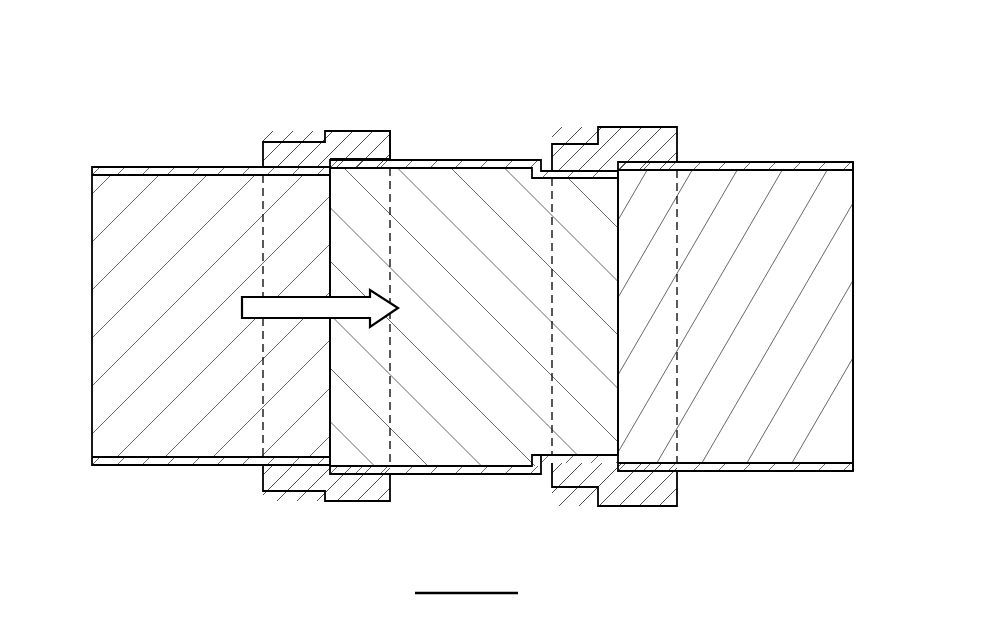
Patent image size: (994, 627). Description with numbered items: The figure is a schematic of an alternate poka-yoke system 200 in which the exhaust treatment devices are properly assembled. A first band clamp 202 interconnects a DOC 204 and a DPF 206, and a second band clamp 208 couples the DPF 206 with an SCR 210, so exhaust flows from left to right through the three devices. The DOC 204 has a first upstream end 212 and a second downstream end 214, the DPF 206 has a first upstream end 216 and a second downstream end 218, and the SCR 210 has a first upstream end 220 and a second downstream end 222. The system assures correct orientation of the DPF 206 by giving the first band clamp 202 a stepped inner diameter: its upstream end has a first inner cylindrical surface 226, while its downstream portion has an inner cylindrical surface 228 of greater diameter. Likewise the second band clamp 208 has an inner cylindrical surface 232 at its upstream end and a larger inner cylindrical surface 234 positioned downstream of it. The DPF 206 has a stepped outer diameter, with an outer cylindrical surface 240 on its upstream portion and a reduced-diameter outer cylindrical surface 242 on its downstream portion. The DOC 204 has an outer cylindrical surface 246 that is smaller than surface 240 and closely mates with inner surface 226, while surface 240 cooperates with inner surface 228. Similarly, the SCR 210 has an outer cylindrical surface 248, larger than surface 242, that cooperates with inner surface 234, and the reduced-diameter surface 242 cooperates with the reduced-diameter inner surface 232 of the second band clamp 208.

The poka-yoke system 200 is at (175, 100).
The first band clamp 202 is at (292, 150).
The DOC 204 is at (118, 325).
The DPF 206 is at (488, 190).
The second band clamp 208 is at (642, 132).
The SCR 210 is at (775, 453).
The first upstream end 212 is at (105, 167).
The second downstream end 214 is at (293, 478).
The first upstream end 216 is at (366, 158).
The second downstream end 218 is at (588, 460).
The first upstream end 220 is at (648, 163).
The second downstream end 222 is at (828, 472).
The first inner cylindrical surface 226 is at (290, 168).
The inner cylindrical surface 228 is at (382, 162).
The inner cylindrical surface 232 is at (587, 172).
The inner cylindrical surface 234 is at (667, 165).
The outer cylindrical surface 240 is at (475, 475).
The outer cylindrical surface 242 is at (562, 465).
The outer cylindrical surface 246 is at (140, 460).
The outer cylindrical surface 248 is at (722, 470).